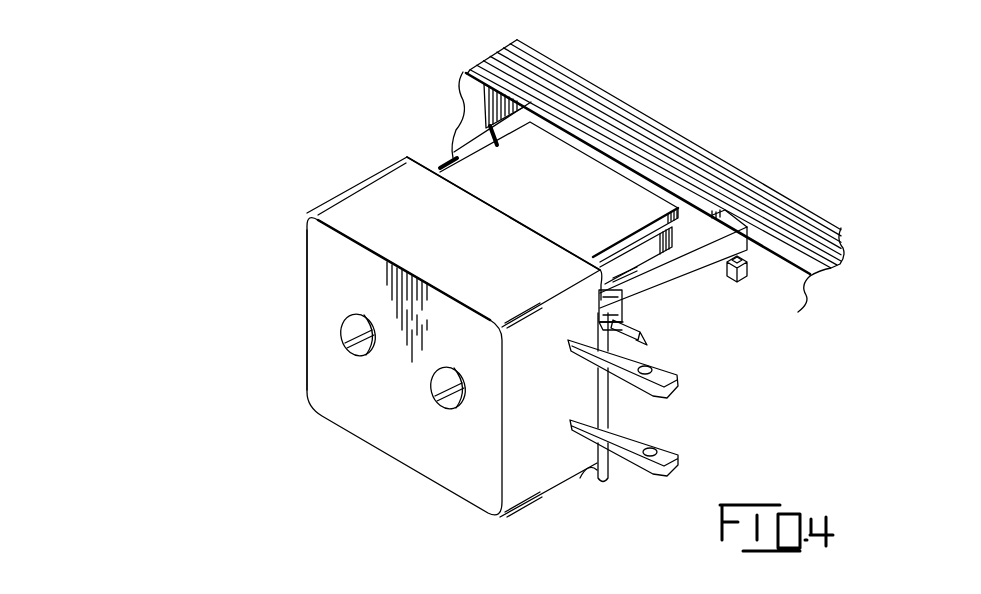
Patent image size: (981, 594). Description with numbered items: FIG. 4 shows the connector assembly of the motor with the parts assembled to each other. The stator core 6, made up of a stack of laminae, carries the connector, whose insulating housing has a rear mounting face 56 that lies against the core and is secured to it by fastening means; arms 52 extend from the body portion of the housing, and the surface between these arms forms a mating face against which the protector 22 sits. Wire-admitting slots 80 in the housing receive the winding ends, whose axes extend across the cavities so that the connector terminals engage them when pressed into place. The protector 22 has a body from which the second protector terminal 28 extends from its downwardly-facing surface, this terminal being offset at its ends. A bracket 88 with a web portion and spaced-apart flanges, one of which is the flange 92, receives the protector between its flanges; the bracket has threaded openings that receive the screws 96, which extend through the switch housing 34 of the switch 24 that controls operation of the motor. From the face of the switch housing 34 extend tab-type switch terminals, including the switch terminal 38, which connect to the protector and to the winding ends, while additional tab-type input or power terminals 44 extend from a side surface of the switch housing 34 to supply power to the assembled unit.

The switch 24 is at (341, 170).
The switch housing 34 is at (303, 267).
The screws 96 is at (446, 409).
The wire-admitting slots 80 is at (446, 160).
The stator core 6 is at (796, 194).
The bracket 88 is at (487, 126).
The flange 92 is at (633, 180).
The mounting face 56 is at (704, 192).
The protector 22 is at (647, 254).
The switch terminal 38 is at (597, 320).
The second protector terminal 28 is at (633, 330).
The arms 52 is at (663, 297).
The input or power terminals 44 is at (668, 397).